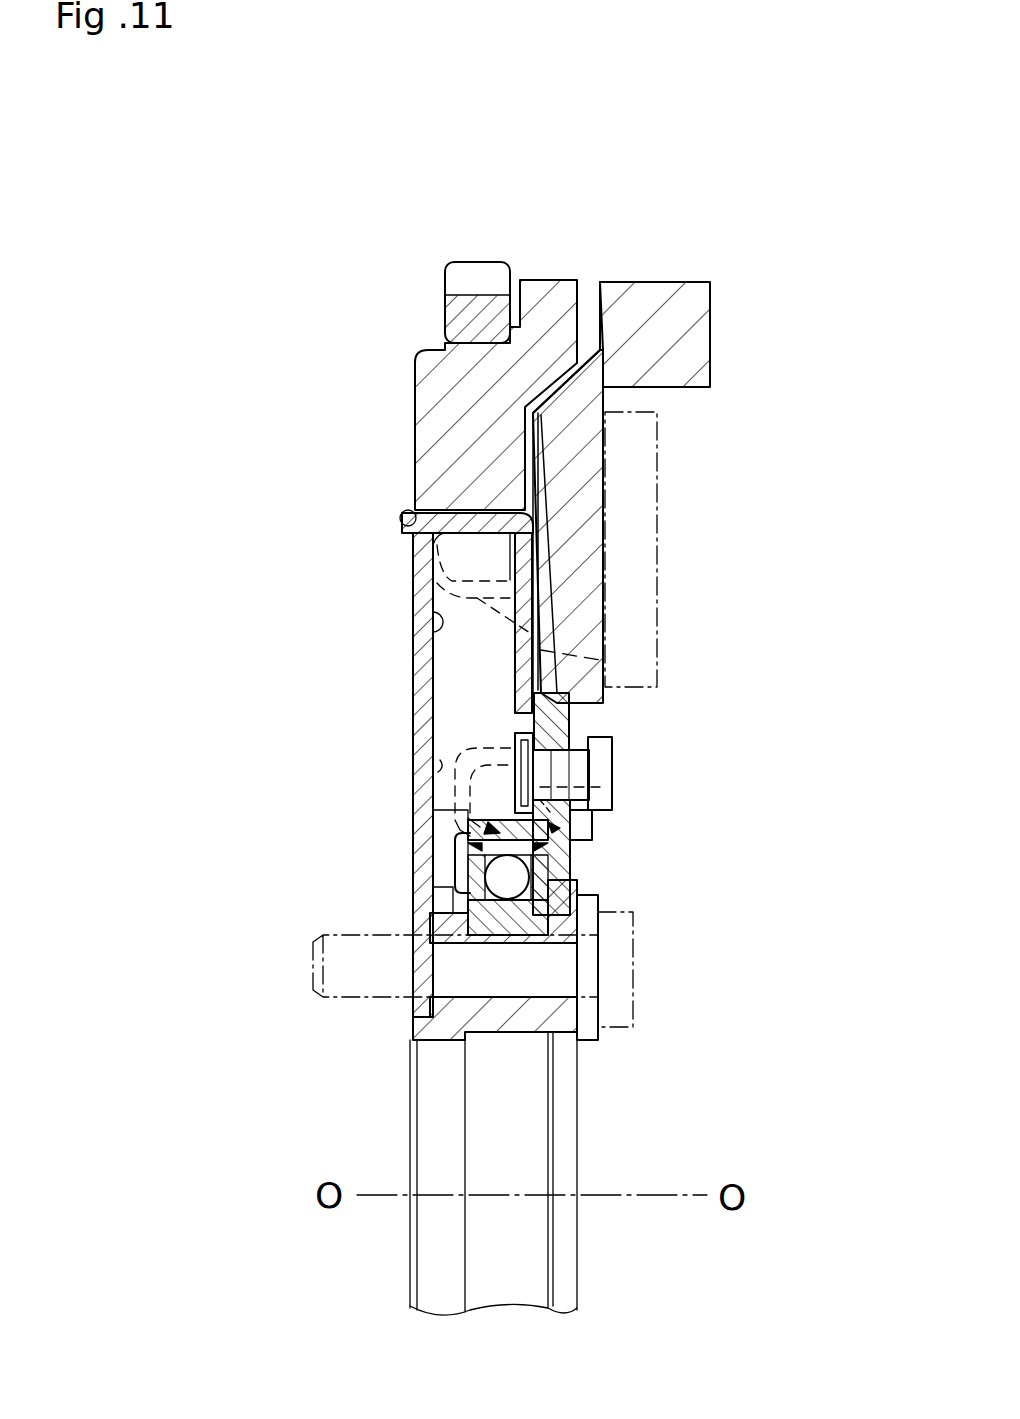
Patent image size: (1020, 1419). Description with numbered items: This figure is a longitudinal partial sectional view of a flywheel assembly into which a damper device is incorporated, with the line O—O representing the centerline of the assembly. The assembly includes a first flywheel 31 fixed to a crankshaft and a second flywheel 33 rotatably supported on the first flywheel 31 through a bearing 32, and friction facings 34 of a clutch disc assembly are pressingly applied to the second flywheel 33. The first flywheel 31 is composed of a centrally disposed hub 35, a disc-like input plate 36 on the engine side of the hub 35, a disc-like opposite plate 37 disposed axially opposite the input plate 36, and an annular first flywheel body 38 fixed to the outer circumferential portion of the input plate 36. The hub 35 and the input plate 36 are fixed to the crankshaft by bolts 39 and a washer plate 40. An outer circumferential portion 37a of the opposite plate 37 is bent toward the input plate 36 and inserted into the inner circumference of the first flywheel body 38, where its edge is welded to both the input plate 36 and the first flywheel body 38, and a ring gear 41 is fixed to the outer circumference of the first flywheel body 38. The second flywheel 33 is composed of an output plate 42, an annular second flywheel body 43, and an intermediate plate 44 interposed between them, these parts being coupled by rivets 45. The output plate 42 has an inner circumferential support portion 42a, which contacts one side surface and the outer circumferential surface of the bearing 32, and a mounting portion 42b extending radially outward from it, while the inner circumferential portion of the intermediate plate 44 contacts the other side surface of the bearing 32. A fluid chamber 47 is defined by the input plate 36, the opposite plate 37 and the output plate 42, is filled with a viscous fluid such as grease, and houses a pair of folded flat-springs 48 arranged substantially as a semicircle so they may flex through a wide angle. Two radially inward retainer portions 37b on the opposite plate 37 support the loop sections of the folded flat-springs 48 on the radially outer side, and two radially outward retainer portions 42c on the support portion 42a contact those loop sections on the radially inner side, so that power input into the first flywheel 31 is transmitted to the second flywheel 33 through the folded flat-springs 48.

The first flywheel 31 is at (410, 475).
The bearing 32 is at (520, 877).
The second flywheel 33 is at (713, 312).
The friction facings 34 is at (657, 452).
The hub 35 is at (447, 1050).
The input plate 36 is at (425, 677).
The opposite plate 37 is at (580, 608).
The outer circumferential portion 37a is at (460, 545).
The retainer portions 37b is at (600, 660).
The first flywheel body 38 is at (437, 383).
The bolts 39 is at (633, 940).
The washer plate 40 is at (565, 1045).
The ring gear 41 is at (493, 272).
The output plate 42 is at (563, 823).
The inner circumferential support portion 42a is at (480, 817).
The mounting portion 42b is at (520, 712).
The retainer portions 42c is at (613, 793).
The second flywheel body 43 is at (585, 517).
The intermediate plate 44 is at (573, 727).
The rivets 45 is at (612, 778).
The fluid chamber 47 is at (415, 630).
The folded flat-springs 48 is at (440, 762).